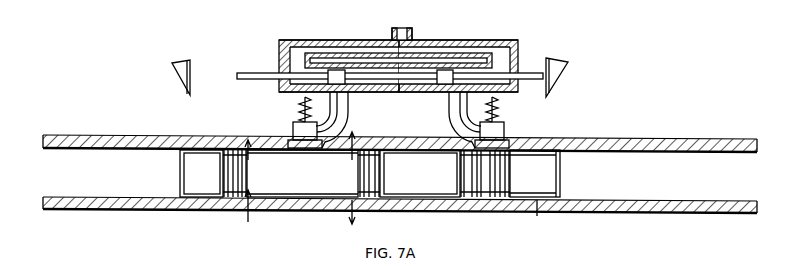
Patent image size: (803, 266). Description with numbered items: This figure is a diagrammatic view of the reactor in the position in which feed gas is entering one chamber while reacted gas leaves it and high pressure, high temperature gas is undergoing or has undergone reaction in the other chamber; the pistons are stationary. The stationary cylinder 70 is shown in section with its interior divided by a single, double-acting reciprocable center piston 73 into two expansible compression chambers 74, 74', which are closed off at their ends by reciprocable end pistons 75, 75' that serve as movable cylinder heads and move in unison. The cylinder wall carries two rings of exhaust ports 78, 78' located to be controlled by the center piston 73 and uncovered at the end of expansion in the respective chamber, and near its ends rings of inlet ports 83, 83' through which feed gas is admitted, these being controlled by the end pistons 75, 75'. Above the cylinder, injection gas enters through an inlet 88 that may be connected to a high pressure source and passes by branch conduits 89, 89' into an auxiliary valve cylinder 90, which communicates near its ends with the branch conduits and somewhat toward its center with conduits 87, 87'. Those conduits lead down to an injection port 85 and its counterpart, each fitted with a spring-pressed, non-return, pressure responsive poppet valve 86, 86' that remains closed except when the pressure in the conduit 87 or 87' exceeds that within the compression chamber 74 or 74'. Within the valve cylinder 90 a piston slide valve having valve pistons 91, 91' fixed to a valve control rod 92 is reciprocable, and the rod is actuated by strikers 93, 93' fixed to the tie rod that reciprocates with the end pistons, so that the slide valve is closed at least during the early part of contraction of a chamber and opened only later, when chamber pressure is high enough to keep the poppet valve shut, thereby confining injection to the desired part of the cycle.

The stationary cylinder 70 is at (289, 205).
The center piston 73 is at (417, 186).
The compression chamber 74 is at (302, 173).
The compression chamber 74' is at (480, 193).
The end piston 75 is at (201, 173).
The end piston 75' is at (535, 173).
The exhaust ports 78 is at (367, 184).
The exhaust ports 78' is at (441, 193).
The inlet ports 83 is at (232, 193).
The inlet ports 83' is at (569, 219).
The injection port 85 is at (313, 142).
The poppet valve 86 is at (282, 113).
The poppet valve 86' is at (510, 122).
The conduit 87 is at (350, 120).
The conduit 87' is at (445, 120).
The inlet 88 is at (406, 30).
The branch conduit 89 is at (333, 50).
The branch conduit 89' is at (458, 50).
The auxiliary valve cylinder 90 is at (379, 92).
The valve piston 91 is at (351, 91).
The valve piston 91' is at (428, 91).
The valve control rod 92 is at (249, 72).
The striker 93 is at (163, 70).
The striker 93' is at (573, 68).